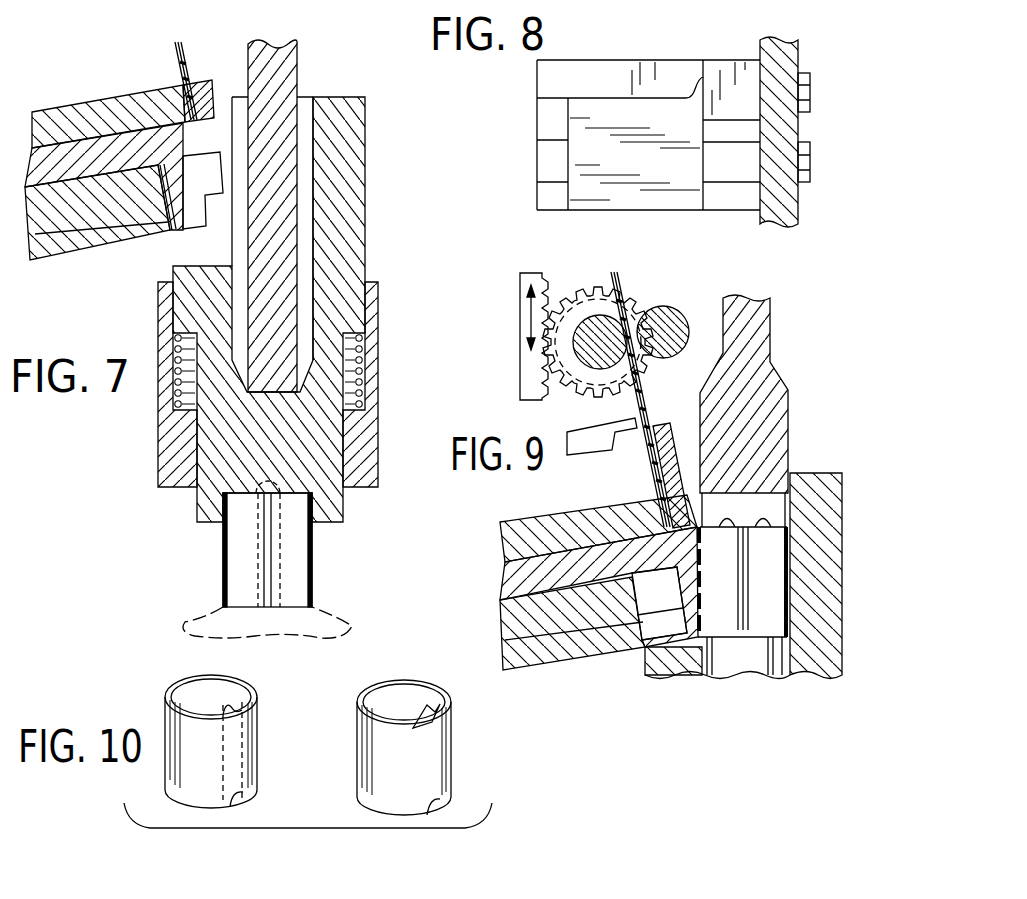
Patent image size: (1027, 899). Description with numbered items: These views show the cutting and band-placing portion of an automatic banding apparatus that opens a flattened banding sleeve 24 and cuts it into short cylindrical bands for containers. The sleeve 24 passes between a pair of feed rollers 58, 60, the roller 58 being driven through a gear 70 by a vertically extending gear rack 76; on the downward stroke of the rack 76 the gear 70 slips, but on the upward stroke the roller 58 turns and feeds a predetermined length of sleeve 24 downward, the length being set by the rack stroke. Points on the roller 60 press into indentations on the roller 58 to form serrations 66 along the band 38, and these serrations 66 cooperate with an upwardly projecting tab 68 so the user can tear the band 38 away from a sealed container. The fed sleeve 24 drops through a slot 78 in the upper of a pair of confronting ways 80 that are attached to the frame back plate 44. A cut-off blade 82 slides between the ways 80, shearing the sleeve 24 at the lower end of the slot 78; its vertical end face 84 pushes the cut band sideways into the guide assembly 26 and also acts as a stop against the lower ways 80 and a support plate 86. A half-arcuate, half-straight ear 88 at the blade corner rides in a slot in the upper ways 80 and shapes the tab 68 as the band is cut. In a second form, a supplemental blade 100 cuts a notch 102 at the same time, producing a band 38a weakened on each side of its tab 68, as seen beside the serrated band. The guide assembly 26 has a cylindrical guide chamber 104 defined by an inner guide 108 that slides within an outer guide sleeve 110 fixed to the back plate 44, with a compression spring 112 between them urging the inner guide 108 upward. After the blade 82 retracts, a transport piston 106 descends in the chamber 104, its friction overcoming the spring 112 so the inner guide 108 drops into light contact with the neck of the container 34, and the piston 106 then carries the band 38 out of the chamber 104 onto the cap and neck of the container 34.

In FIG. 7, the banding sleeve 24 is at (190, 62).
In FIG. 9, the banding sleeve 24 is at (627, 281).
In FIG. 7, the guide assembly 26 is at (370, 222).
In FIG. 9, the guide assembly 26 is at (818, 678).
In FIG. 7, the container 34 is at (350, 628).
In FIG. 7, the band 38 is at (313, 540).
In FIG. 10, the band 38 is at (238, 682).
In FIG. 9, the band 38a is at (717, 603).
In FIG. 10, the band 38a is at (403, 681).
In FIG. 8, the frame back plate 44 is at (795, 56).
In FIG. 9, the feed roller 58 is at (592, 375).
In FIG. 9, the feed roller 60 is at (672, 312).
In FIG. 10, the serrations 66 is at (225, 760).
In FIG. 10, the tab 68 is at (238, 713).
In FIG. 9, the gear 70 is at (578, 290).
In FIG. 9, the gear rack 76 is at (520, 383).
In FIG. 7, the slot 78 is at (190, 96).
In FIG. 9, the slot 78 is at (660, 476).
In FIG. 7, the ways 80 is at (75, 106).
In FIG. 8, the ways 80 is at (590, 68).
In FIG. 9, the ways 80 is at (563, 517).
In FIG. 7, the cut-off blade 82 is at (32, 163).
In FIG. 8, the cut-off blade 82 is at (668, 126).
In FIG. 9, the cut-off blade 82 is at (503, 582).
In FIG. 7, the end face 84 is at (183, 150).
In FIG. 8, the end face 84 is at (665, 200).
In FIG. 9, the end face 84 is at (659, 603).
In FIG. 7, the support plate 86 is at (97, 240).
In FIG. 8, the support plate 86 is at (553, 203).
In FIG. 9, the support plate 86 is at (535, 652).
In FIG. 8, the ear 88 is at (700, 75).
In FIG. 9, the supplemental blade 100 is at (601, 448).
In FIG. 9, the notch 102 is at (745, 506).
In FIG. 10, the notch 102 is at (445, 720).
In FIG. 7, the guide chamber 104 is at (311, 136).
In FIG. 9, the guide chamber 104 is at (790, 668).
In FIG. 7, the transport piston 106 is at (292, 70).
In FIG. 9, the transport piston 106 is at (770, 319).
In FIG. 7, the inner guide 108 is at (358, 261).
In FIG. 9, the inner guide 108 is at (832, 473).
In FIG. 7, the outer guide sleeve 110 is at (372, 458).
In FIG. 7, the compression spring 112 is at (364, 362).